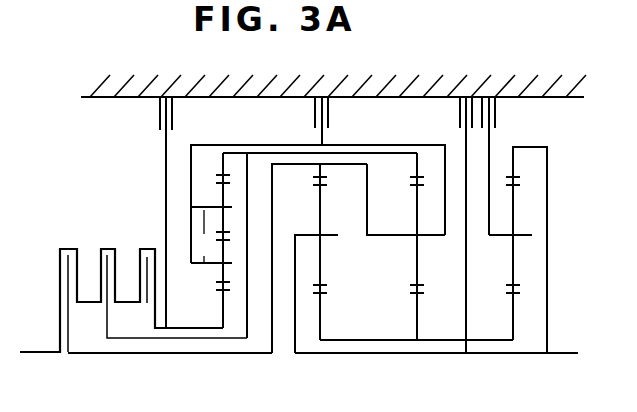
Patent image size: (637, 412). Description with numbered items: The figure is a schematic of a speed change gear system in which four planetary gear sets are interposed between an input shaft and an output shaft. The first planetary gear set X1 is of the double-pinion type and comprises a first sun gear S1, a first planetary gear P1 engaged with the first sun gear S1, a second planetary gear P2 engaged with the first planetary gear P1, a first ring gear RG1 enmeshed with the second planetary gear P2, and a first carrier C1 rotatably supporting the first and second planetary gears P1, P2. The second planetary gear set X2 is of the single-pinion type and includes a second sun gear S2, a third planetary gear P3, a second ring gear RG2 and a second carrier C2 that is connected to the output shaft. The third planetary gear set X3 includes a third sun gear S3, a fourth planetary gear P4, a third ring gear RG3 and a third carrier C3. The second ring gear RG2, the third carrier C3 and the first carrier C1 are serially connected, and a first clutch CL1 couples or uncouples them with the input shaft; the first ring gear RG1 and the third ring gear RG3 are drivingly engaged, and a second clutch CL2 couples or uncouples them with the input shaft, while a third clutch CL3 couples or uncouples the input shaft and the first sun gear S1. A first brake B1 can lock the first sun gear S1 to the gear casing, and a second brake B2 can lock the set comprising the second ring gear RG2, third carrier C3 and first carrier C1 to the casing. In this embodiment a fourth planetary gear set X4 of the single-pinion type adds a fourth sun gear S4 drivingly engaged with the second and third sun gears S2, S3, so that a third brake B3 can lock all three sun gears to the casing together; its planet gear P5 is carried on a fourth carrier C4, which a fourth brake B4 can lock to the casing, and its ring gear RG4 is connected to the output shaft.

The first clutch CL1 is at (54, 288).
The second clutch CL2 is at (157, 281).
The third clutch CL3 is at (170, 276).
The first brake B1 is at (182, 212).
The second brake B2 is at (338, 121).
The third brake B3 is at (445, 225).
The fourth brake B4 is at (509, 166).
The first ring gear RG1 is at (224, 171).
The second ring gear RG2 is at (325, 178).
The third ring gear RG3 is at (416, 178).
The ring gear RG4 is at (515, 165).
The first planetary gear P1 is at (222, 273).
The second planetary gear P2 is at (228, 191).
The third planetary gear P3 is at (320, 239).
The fourth planetary gear P4 is at (420, 238).
The fifth planet gear P5 is at (513, 267).
The first carrier C1 is at (211, 235).
The second carrier C2 is at (318, 233).
The third carrier C3 is at (398, 236).
The fourth carrier C4 is at (494, 236).
The first sun gear S1 is at (226, 302).
The second sun gear S2 is at (322, 300).
The third sun gear S3 is at (420, 300).
The fourth sun gear S4 is at (516, 300).
The first planetary gear set X1 is at (222, 298).
The second planetary gear set X2 is at (319, 298).
The third planetary gear set X3 is at (416, 298).
The fourth planetary gear set X4 is at (512, 298).